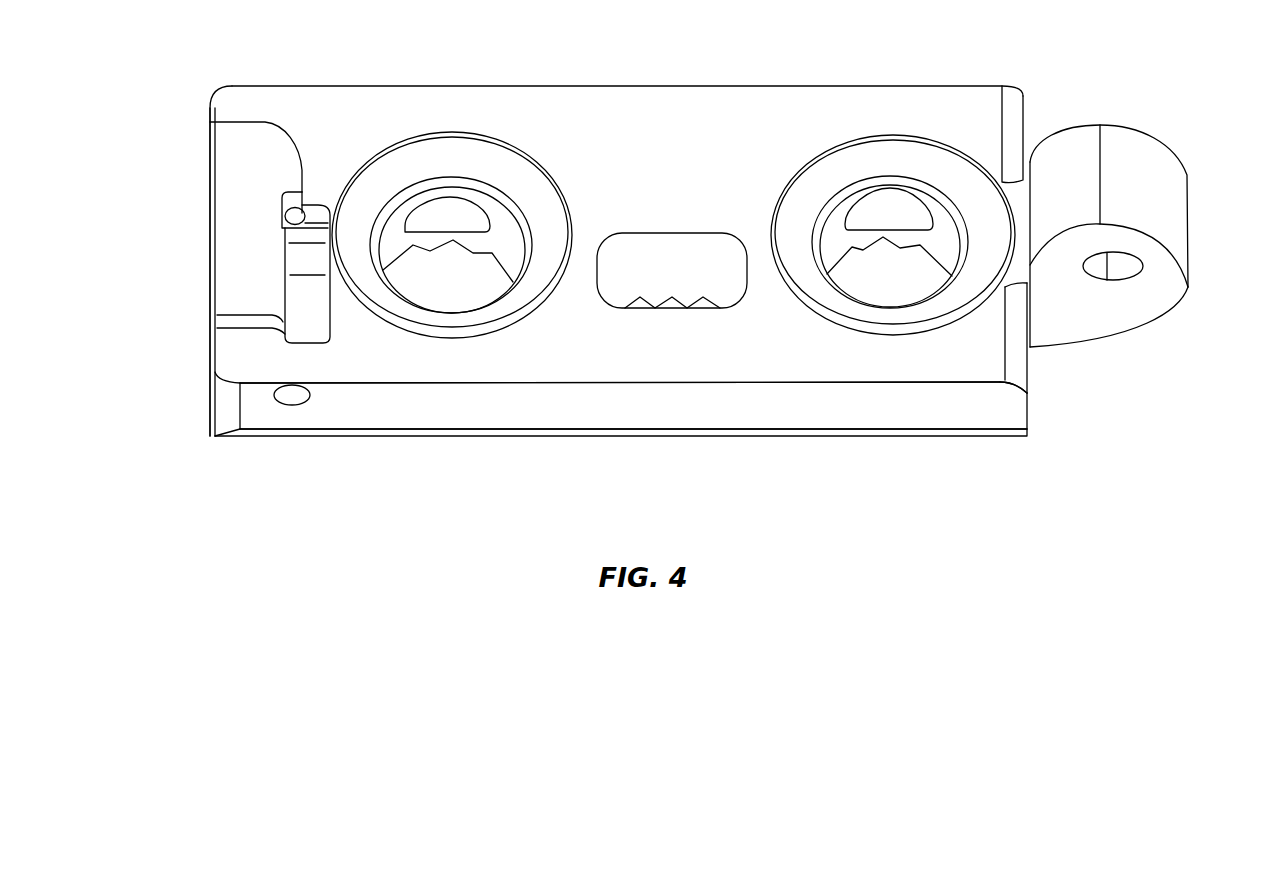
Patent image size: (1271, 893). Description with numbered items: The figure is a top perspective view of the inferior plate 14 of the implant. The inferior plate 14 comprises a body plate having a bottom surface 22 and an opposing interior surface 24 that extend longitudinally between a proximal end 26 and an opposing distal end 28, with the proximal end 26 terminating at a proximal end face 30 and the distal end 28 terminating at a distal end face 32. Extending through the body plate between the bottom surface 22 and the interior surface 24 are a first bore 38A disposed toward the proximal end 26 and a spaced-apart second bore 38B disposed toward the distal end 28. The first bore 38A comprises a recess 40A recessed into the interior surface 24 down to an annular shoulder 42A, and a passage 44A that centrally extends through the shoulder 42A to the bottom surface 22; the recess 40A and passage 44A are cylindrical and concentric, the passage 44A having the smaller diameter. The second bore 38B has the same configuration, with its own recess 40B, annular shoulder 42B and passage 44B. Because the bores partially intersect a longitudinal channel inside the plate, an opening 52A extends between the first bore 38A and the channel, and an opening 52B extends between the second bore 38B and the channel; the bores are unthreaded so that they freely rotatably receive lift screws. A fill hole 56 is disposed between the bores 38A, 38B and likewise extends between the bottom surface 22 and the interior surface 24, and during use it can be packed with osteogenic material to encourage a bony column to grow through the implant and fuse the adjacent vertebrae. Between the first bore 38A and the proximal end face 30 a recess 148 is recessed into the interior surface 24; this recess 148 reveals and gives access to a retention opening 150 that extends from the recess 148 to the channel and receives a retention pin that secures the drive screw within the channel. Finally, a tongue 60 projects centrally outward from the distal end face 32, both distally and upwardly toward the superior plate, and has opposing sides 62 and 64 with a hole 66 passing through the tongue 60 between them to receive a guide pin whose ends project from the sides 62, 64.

The inferior plate 14 is at (563, 415).
The bottom surface 22 is at (388, 265).
The interior surface 24 is at (810, 360).
The proximal end 26 is at (250, 477).
The distal end 28 is at (1012, 460).
The proximal end face 30 is at (210, 112).
The distal end face 32 is at (1035, 404).
The first bore 38A is at (445, 158).
The second bore 38B is at (857, 155).
The recess 40A is at (488, 143).
The recess 40B is at (907, 139).
The annular shoulder 42A is at (507, 183).
The annular shoulder 42B is at (933, 172).
The passage 44A is at (498, 243).
The passage 44B is at (952, 250).
The opening 52A is at (425, 210).
The opening 52B is at (865, 212).
The fill hole 56 is at (667, 258).
The tongue 60 is at (1177, 222).
The side 62 is at (1147, 308).
The side 64 is at (1118, 130).
The hole 66 is at (1133, 268).
The recess 148 is at (300, 326).
The retention opening 150 is at (297, 188).